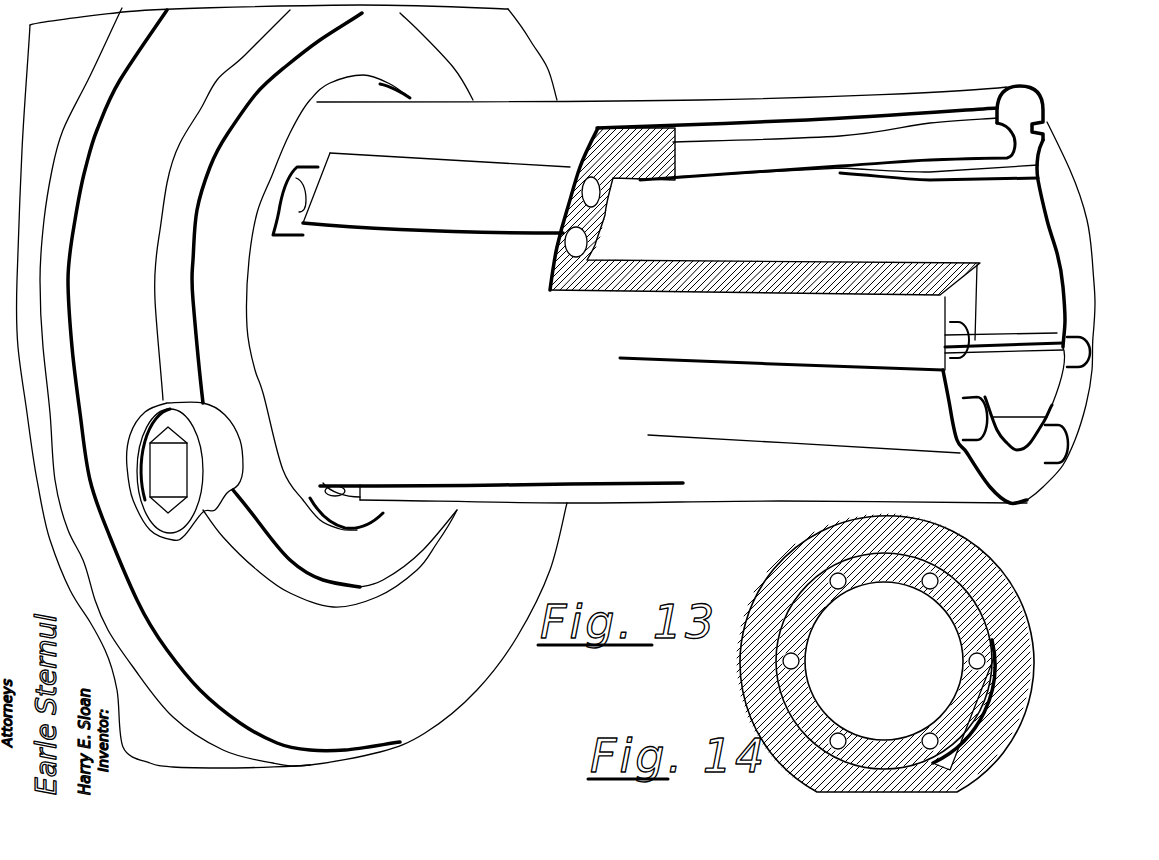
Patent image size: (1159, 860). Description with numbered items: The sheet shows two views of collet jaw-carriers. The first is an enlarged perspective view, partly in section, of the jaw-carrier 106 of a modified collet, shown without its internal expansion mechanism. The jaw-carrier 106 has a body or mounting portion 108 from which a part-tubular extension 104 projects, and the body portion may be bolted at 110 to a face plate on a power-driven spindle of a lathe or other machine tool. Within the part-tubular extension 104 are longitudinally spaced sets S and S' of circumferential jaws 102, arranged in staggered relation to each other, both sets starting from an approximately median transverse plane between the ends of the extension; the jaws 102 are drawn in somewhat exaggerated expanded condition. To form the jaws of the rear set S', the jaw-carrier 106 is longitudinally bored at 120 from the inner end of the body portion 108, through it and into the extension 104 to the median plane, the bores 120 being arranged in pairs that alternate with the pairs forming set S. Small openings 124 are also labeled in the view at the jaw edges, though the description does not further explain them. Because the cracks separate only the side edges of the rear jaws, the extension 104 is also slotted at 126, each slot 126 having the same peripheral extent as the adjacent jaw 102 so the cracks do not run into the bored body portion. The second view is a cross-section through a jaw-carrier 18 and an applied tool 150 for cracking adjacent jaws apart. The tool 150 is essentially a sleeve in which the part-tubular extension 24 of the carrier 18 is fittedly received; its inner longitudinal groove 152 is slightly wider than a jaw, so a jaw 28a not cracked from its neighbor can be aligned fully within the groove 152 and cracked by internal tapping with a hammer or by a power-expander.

In FIG. 14, the jaw-carrier 18 is at (790, 703).
In FIG. 14, the part-tubular extension 24 is at (790, 682).
In FIG. 14, the jaw 28a is at (953, 720).
In FIG. 13, the jaws 102 is at (383, 199).
In FIG. 13, the part-tubular extension 104 is at (700, 500).
In FIG. 13, the jaw-carrier 106 is at (563, 78).
In FIG. 13, the body or mounting portion 108 is at (425, 703).
In FIG. 13, the bolt 110 is at (148, 450).
In FIG. 13, the bores 120 is at (296, 190).
In FIG. 13, the small holes 124 is at (316, 173).
In FIG. 13, the slot 126 is at (293, 210).
In FIG. 14, the tool 150 is at (990, 575).
In FIG. 14, the inner longitudinal groove 152 is at (970, 732).
In FIG. 13, the set of jaws S is at (1015, 223).
In FIG. 13, the set of jaws S' is at (502, 300).